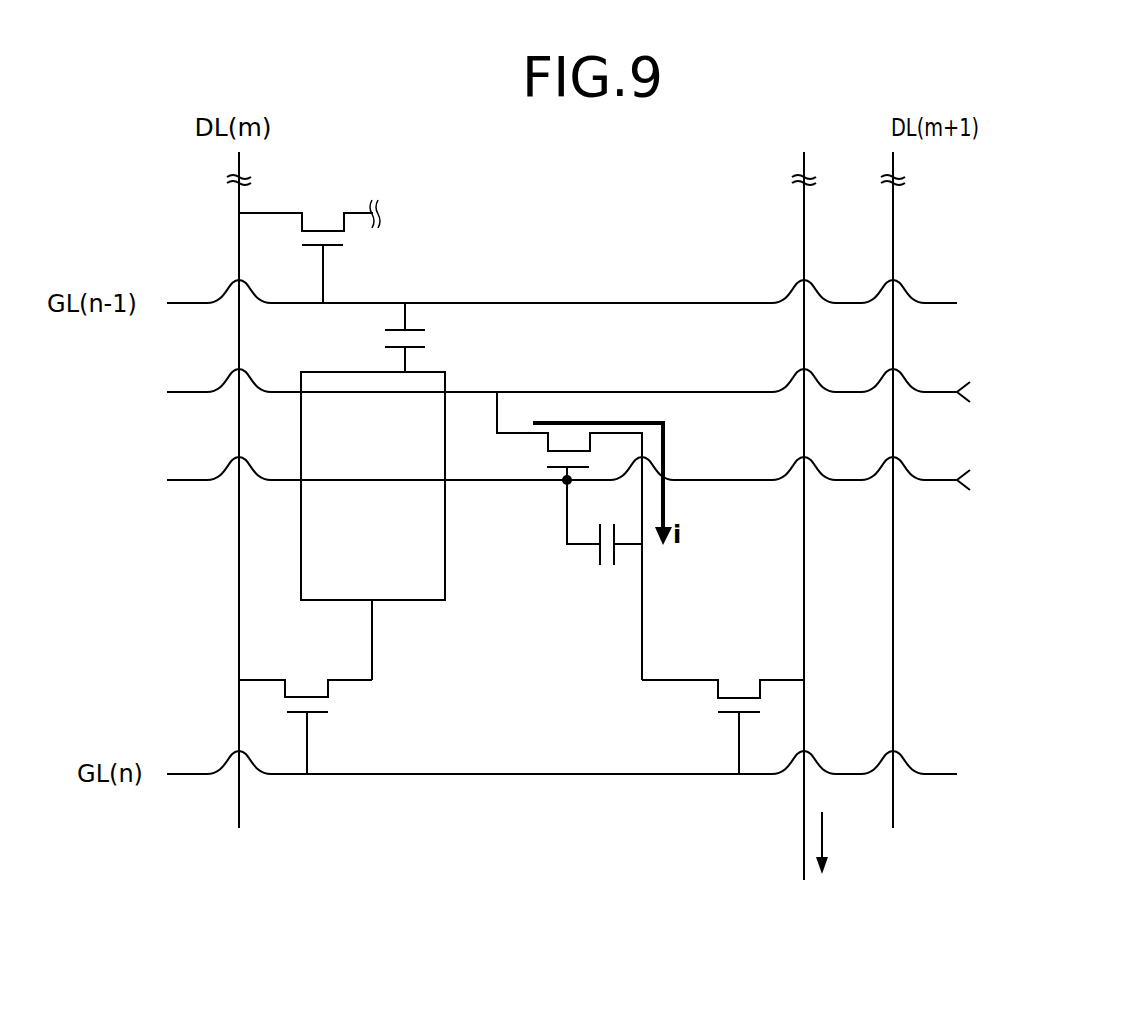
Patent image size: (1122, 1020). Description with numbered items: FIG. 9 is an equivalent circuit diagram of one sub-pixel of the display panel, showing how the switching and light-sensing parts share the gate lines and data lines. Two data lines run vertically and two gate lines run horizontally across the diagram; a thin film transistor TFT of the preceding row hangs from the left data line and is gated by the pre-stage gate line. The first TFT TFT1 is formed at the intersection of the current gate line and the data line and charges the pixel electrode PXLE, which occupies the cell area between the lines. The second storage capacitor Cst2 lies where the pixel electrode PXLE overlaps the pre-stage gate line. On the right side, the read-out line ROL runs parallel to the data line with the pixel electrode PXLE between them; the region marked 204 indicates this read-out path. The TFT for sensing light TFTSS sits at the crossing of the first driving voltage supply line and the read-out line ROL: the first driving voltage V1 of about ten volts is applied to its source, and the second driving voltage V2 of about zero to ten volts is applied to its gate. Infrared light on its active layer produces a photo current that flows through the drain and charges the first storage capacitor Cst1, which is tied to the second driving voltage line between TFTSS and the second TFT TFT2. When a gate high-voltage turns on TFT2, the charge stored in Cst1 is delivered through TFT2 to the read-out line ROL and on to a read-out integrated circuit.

The readout line region 204 is at (805, 597).
The thin film transistor TFT is at (311, 236).
The first TFT TFT1 is at (318, 727).
The second TFT TFT2 is at (723, 727).
The TFT for sensing light TFTSS is at (575, 536).
The first storage capacitor Cst1 is at (604, 540).
The second storage capacitor Cst2 is at (369, 337).
The pixel electrode PXLE is at (333, 562).
The read-out line ROL is at (802, 869).
The first driving voltage V1 is at (593, 388).
The second driving voltage V2 is at (593, 476).